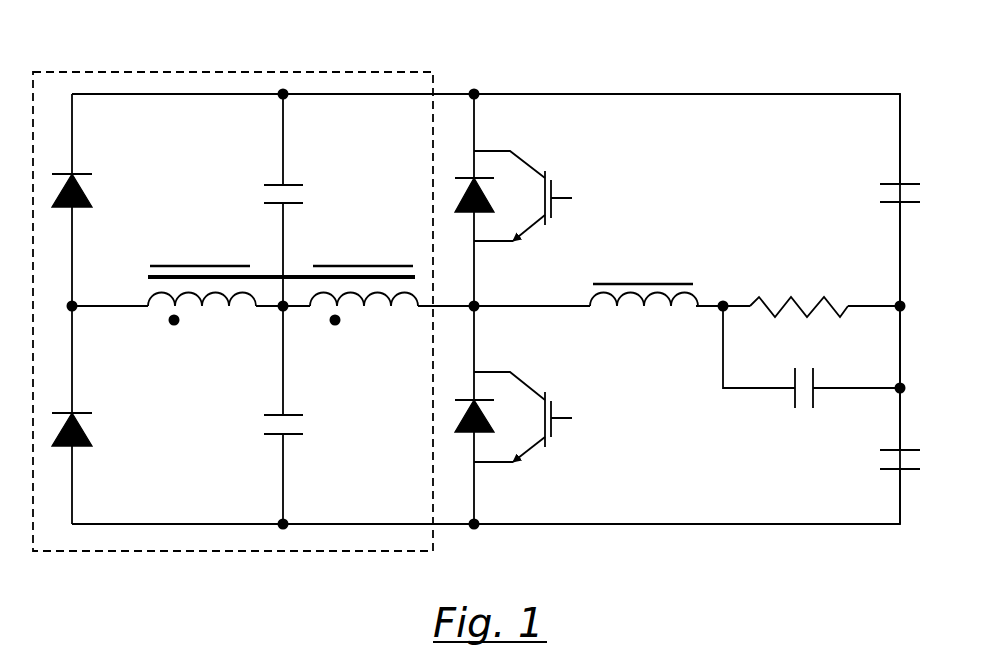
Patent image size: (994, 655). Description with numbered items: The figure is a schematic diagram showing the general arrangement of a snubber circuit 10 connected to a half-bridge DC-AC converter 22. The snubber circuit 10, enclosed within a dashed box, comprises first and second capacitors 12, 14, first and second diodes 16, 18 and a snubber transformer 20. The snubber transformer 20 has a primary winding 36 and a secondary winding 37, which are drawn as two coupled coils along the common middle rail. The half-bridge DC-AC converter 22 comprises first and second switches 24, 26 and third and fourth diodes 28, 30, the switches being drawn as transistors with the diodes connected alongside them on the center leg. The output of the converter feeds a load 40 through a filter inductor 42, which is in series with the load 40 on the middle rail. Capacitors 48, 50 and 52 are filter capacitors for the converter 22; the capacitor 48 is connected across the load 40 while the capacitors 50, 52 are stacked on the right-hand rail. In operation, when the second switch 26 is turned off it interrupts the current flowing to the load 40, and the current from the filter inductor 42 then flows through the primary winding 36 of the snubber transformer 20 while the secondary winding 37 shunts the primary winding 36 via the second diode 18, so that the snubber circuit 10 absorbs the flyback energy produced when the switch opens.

The snubber circuit 10 is at (313, 70).
The first capacitor 12 is at (292, 184).
The second capacitor 14 is at (292, 414).
The first diode 16 is at (80, 173).
The second diode 18 is at (80, 411).
The snubber transformer 20 is at (263, 246).
The half-bridge DC-AC converter 22 is at (657, 62).
The first switch 24 is at (526, 165).
The second switch 26 is at (524, 386).
The third diode 28 is at (466, 177).
The fourth diode 30 is at (466, 399).
The primary winding 36 is at (364, 309).
The secondary winding 37 is at (203, 309).
The load 40 is at (792, 297).
The filter inductor 42 is at (668, 311).
The filter capacitor 48 is at (792, 401).
The filter capacitor 50 is at (890, 183).
The filter capacitor 52 is at (890, 449).